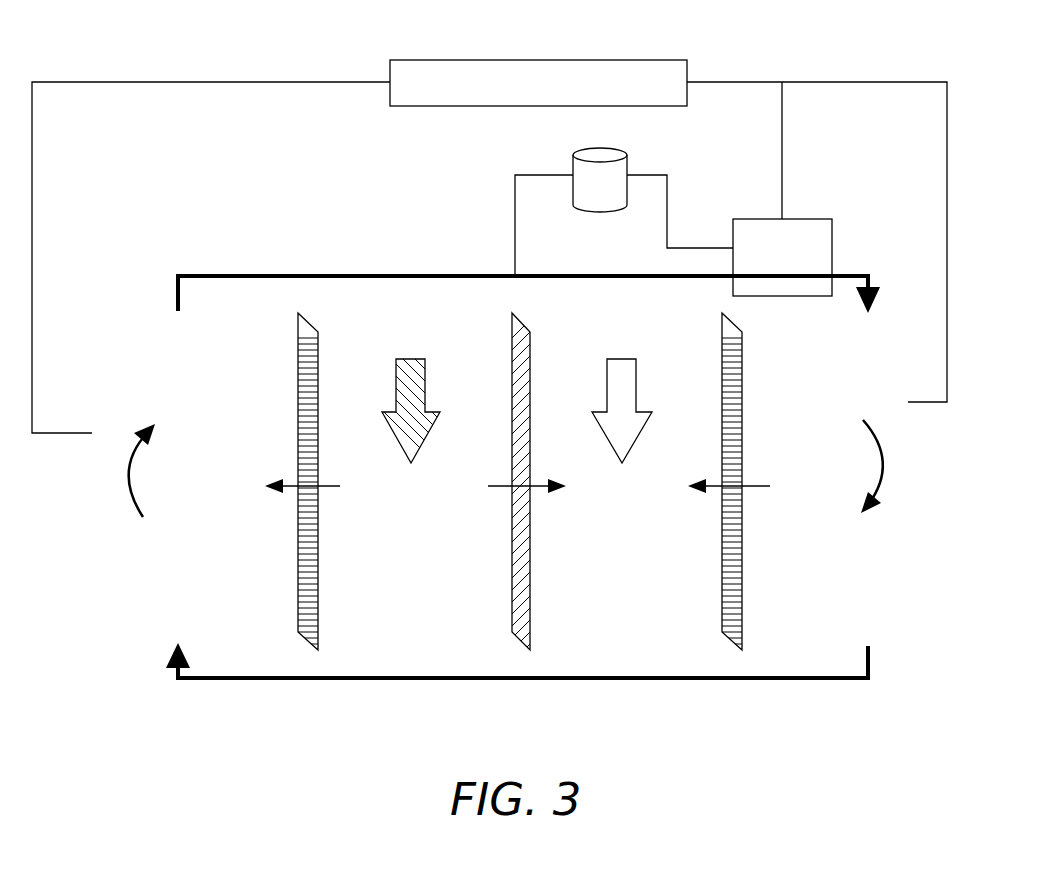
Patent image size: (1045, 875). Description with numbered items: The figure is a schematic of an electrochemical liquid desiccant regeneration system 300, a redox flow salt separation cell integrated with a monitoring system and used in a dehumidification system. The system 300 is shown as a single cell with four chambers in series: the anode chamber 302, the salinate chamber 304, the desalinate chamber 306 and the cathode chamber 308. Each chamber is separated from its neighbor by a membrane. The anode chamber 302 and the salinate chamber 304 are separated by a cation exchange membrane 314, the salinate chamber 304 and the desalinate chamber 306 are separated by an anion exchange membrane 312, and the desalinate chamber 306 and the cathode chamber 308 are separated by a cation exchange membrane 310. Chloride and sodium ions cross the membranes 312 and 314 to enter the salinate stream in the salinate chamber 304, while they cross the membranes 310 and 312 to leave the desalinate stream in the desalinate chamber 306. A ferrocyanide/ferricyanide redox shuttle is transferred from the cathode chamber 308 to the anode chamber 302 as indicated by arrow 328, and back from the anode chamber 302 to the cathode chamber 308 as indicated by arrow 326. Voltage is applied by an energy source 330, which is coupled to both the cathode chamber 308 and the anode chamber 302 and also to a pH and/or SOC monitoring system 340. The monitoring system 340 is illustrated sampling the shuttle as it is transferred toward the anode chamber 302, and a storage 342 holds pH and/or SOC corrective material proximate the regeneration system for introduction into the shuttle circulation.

The electrochemical liquid desiccant regeneration system 300 is at (226, 222).
The anode chamber 302 is at (839, 442).
The salinate chamber 304 is at (656, 594).
The desalinate chamber 306 is at (462, 594).
The cathode chamber 308 is at (219, 476).
The cation exchange membrane 310 is at (320, 578).
The anion exchange membrane 312 is at (532, 562).
The cation exchange membrane 314 is at (745, 552).
The arrow 326 is at (268, 683).
The arrow 328 is at (345, 274).
The energy source 330 is at (452, 58).
The pH and/or SOC monitoring system 340 is at (808, 219).
The storage for pH and/or SOC corrective material 342 is at (588, 148).